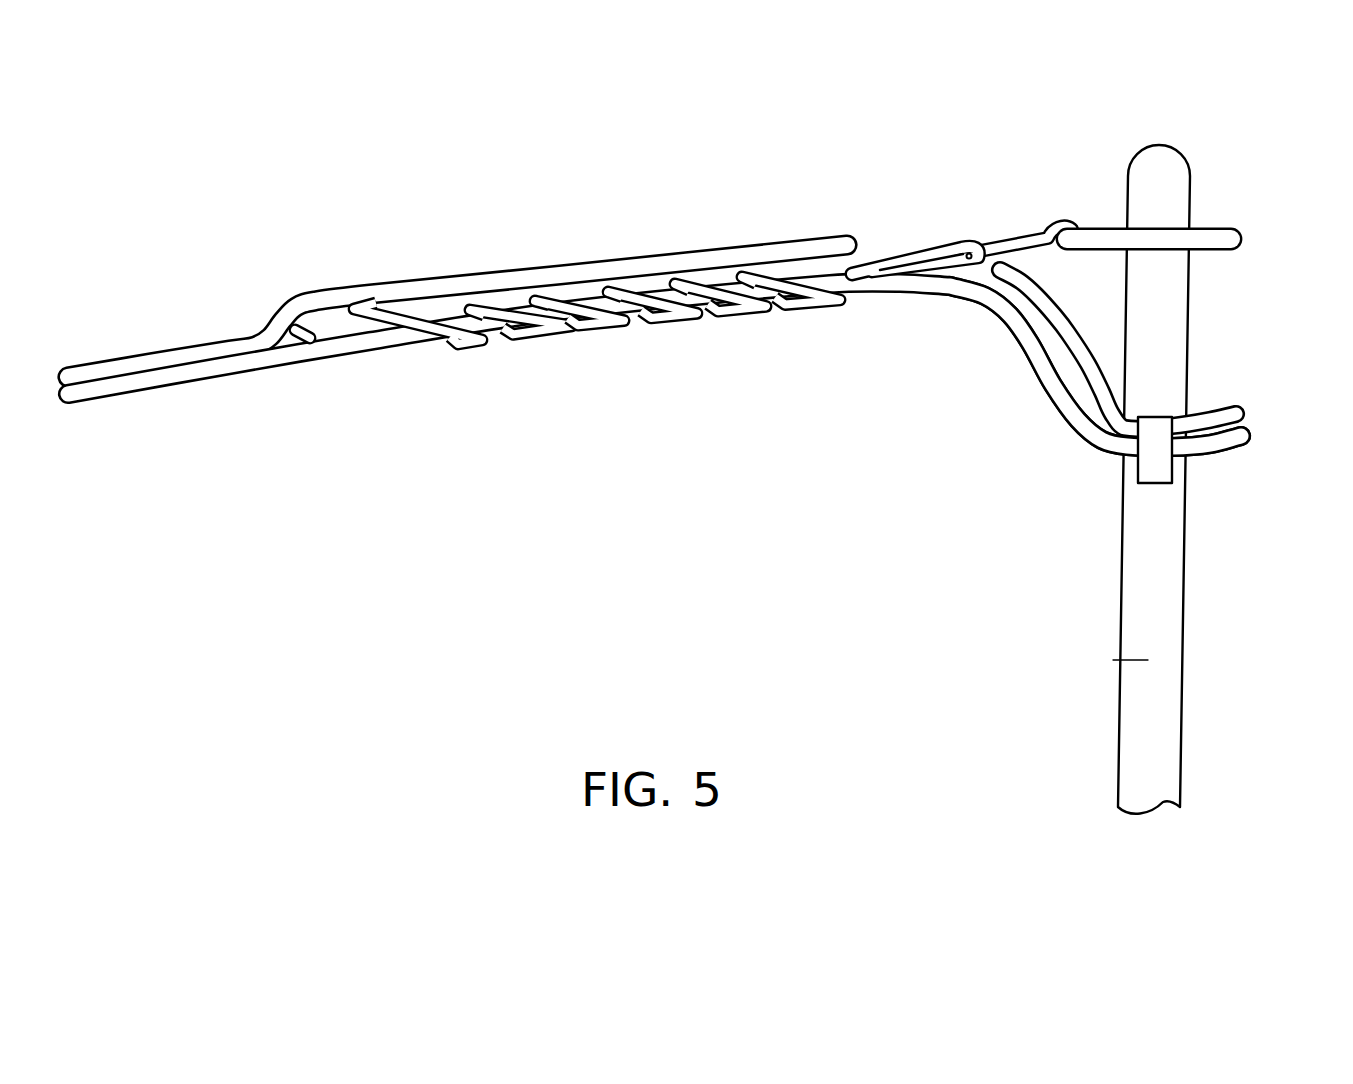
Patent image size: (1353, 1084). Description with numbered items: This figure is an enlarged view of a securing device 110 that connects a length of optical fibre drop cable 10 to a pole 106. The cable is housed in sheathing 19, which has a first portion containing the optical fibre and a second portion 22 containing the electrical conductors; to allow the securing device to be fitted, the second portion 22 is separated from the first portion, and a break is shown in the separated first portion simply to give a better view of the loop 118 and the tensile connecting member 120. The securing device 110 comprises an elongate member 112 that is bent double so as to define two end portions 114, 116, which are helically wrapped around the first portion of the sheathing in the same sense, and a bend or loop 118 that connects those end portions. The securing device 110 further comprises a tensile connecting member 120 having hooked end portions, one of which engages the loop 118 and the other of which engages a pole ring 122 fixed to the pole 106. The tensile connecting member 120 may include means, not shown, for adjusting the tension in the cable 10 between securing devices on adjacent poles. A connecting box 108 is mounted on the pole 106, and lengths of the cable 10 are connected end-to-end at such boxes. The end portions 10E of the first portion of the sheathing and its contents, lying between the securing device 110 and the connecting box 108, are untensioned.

The optical fibre drop cable 10 is at (203, 373).
The end portions 10E is at (1016, 378).
The sheathing 19 is at (100, 405).
The second portion 22 is at (78, 366).
The pole 106 is at (1172, 596).
The connecting box 108 is at (1154, 430).
The securing device 110 is at (830, 203).
The elongate member 112 is at (662, 343).
The end portion 114 is at (300, 341).
The end portion 116 is at (462, 350).
The loop 118 is at (926, 256).
The tensile connecting member 120 is at (1023, 246).
The pole ring 122 is at (1084, 237).